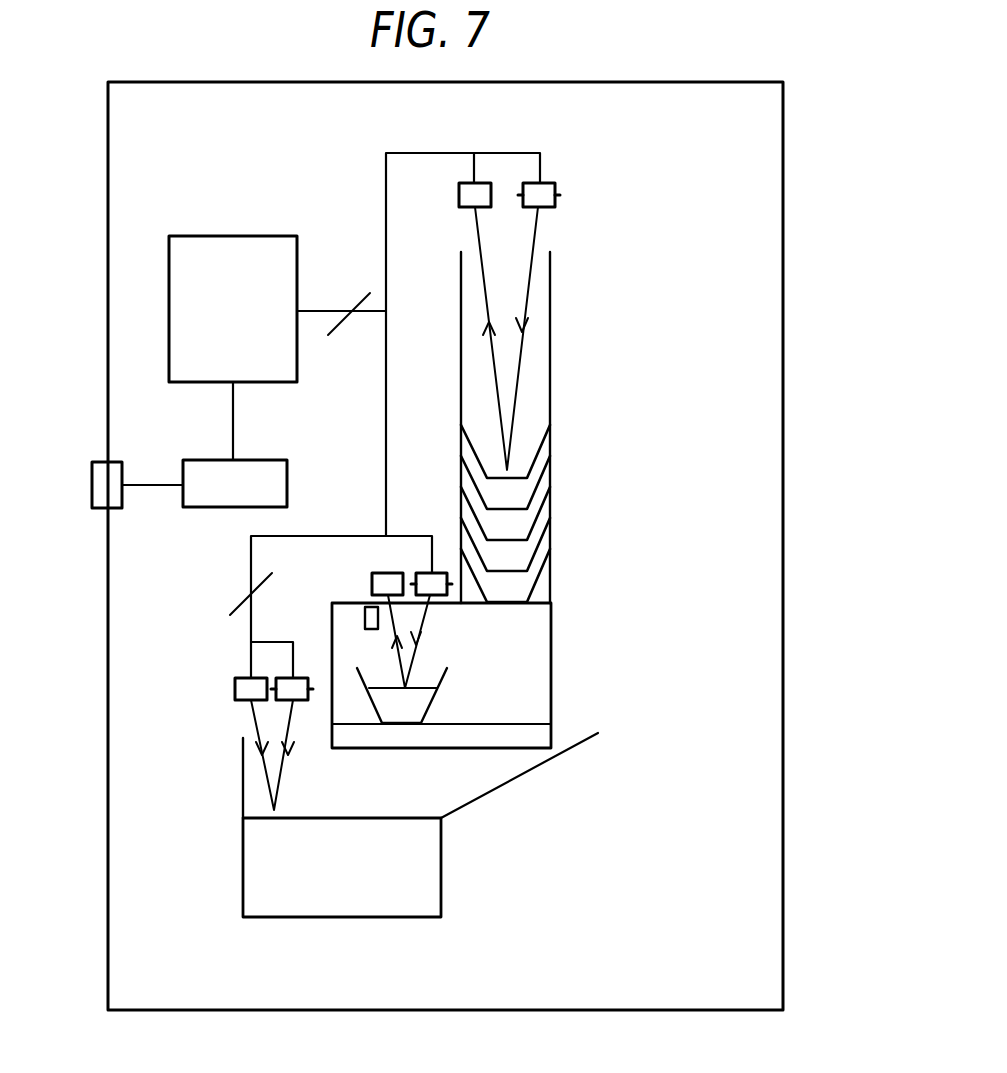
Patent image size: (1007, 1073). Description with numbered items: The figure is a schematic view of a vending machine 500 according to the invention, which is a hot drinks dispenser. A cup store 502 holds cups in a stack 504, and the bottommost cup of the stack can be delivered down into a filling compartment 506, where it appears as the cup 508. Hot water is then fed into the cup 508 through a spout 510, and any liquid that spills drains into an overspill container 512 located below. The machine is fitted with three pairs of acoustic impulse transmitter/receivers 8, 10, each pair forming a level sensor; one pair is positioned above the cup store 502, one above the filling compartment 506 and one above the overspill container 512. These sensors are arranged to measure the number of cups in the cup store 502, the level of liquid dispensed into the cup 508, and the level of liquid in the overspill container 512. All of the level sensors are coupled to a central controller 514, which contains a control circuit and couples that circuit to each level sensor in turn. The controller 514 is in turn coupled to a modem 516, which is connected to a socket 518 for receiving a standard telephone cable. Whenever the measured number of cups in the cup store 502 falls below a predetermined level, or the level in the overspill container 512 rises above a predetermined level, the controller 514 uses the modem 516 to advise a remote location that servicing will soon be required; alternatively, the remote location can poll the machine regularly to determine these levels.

The vending machine 500 is at (781, 217).
The cup store 502 is at (551, 372).
The stack 504 is at (515, 520).
The filling compartment 506 is at (551, 663).
The cup 508 is at (433, 707).
The spout 510 is at (365, 617).
The overspill container 512 is at (441, 873).
The central controller 514 is at (233, 236).
The modem 516 is at (215, 507).
The socket 518 is at (92, 462).
The acoustic impulse transmitter/receiver 10 is at (459, 195).
The acoustic impulse transmitter/receiver 8 is at (555, 192).